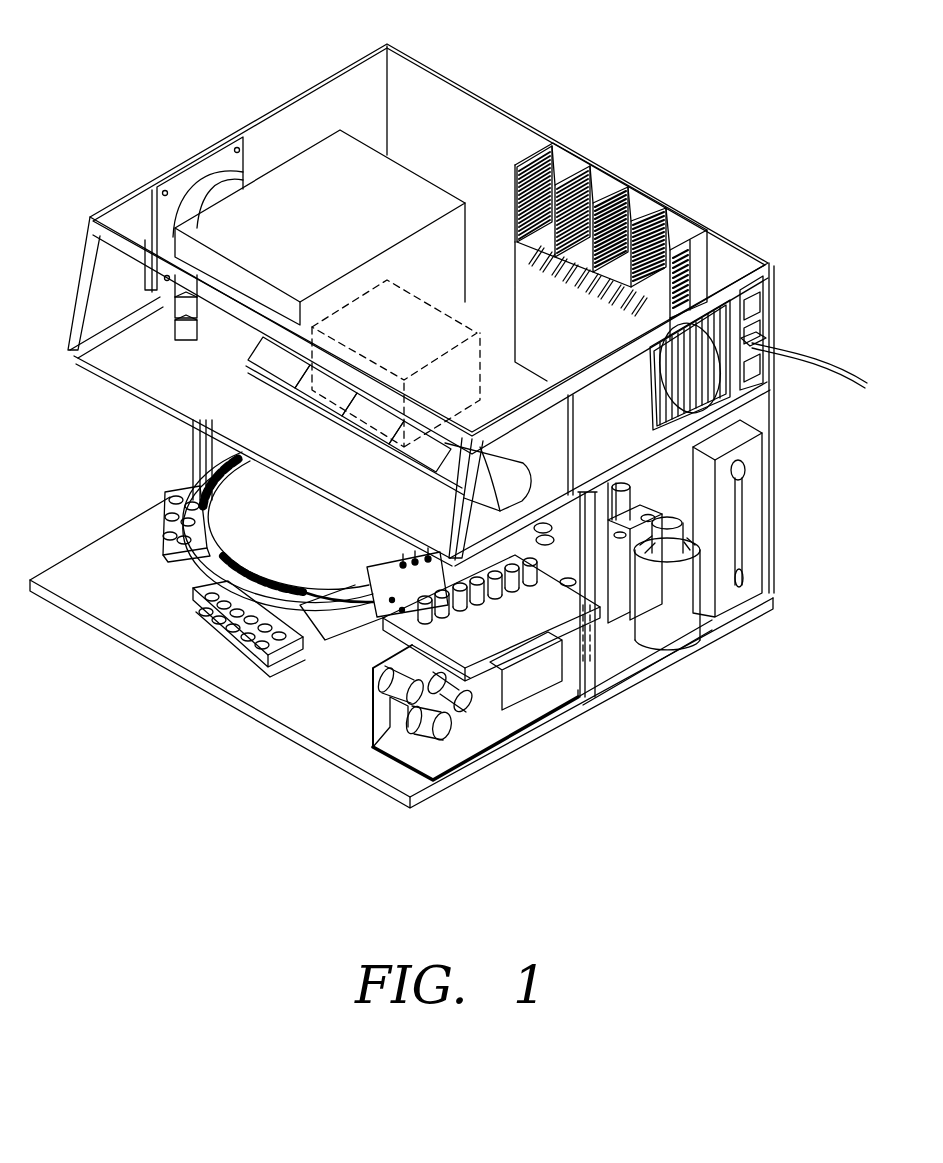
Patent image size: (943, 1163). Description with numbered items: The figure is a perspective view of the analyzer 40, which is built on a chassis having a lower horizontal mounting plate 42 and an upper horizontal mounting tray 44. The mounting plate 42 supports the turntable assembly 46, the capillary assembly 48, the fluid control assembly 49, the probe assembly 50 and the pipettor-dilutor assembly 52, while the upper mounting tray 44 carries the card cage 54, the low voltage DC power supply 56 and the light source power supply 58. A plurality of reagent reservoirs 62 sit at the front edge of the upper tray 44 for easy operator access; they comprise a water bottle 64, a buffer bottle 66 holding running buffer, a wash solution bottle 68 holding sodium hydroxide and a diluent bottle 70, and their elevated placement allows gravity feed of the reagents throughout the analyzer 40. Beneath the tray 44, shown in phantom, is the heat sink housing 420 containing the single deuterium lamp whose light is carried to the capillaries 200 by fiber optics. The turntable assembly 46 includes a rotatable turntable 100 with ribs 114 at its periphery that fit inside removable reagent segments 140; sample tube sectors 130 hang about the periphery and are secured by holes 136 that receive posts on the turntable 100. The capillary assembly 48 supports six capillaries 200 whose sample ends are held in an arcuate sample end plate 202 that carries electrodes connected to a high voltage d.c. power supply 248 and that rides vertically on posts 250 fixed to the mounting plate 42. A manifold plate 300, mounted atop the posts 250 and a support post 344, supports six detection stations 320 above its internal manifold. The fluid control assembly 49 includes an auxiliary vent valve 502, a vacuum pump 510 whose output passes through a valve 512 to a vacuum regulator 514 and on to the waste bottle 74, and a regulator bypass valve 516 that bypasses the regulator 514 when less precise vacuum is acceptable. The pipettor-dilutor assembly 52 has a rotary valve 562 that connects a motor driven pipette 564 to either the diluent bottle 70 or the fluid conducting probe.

The analyzer 40 is at (295, 70).
The lower horizontal mounting plate 42 is at (138, 634).
The upper horizontal mounting tray 44 is at (503, 328).
The turntable assembly 46 is at (207, 548).
The capillary assembly 48 is at (358, 574).
The fluid control assembly 49 is at (437, 770).
The probe assembly 50 is at (625, 506).
The pipettor-dilutor assembly 52 is at (763, 456).
The card cage 54 is at (320, 247).
The low voltage DC power supply 56 is at (624, 184).
The light source power supply 58 is at (587, 341).
The reagent reservoirs 62 is at (527, 455).
The water bottle 64 is at (275, 366).
The buffer bottle 66 is at (320, 398).
The wash solution bottle 68 is at (368, 424).
The diluent bottle 70 is at (410, 450).
The waste bottle 74 is at (680, 633).
The turntable 100 is at (195, 563).
The ribs 114 is at (220, 532).
The sample tube sectors 130 is at (183, 494).
The holes 136 is at (183, 530).
The reagent segments 140 is at (222, 483).
The capillaries 200 is at (396, 553).
The sample end plate 202 is at (383, 564).
The high voltage d.c. power supply 248 is at (385, 637).
The posts 250 is at (380, 645).
The manifold plate 300 is at (603, 650).
The detection stations 320 is at (488, 611).
The support post 344 is at (600, 650).
The heat sink housing 420 is at (412, 296).
The auxiliary vent valve 502 is at (388, 687).
The vacuum pump 510 is at (540, 682).
The valve 512 is at (462, 708).
The vacuum regulator 514 is at (392, 727).
The regulator bypass valve 516 is at (537, 712).
The rotary valve 562 is at (745, 471).
The motor driven pipette 564 is at (745, 540).